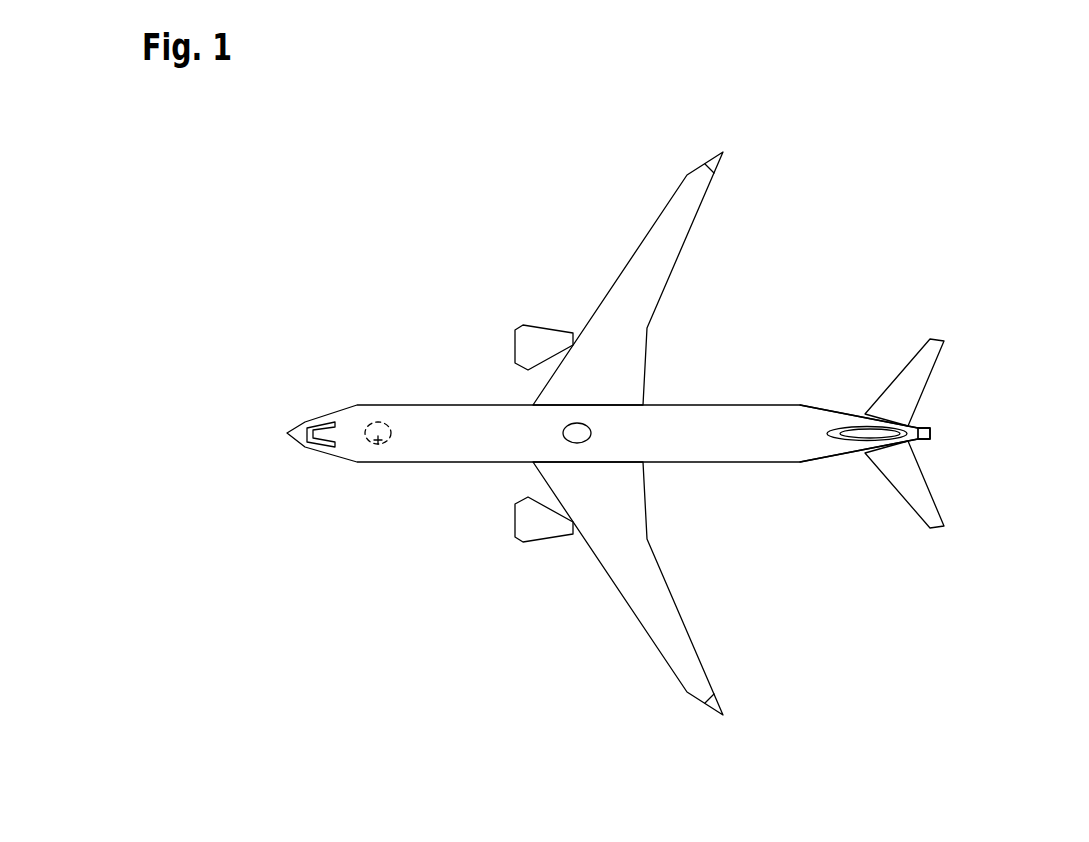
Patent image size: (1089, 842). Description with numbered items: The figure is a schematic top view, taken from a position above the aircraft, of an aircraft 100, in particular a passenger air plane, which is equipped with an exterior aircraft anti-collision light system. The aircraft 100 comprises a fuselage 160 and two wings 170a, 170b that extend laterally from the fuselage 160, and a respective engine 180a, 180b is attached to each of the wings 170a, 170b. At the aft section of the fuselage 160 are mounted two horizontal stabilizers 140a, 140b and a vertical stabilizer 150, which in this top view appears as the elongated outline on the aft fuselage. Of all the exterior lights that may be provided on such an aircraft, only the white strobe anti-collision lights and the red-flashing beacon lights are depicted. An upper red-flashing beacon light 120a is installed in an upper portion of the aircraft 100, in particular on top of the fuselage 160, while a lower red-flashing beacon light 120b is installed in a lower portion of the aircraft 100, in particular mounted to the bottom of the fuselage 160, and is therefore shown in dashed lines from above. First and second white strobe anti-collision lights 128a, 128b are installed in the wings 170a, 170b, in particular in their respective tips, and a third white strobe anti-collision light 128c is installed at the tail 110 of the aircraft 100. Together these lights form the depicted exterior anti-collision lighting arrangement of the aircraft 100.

The aircraft 100 is at (866, 219).
The tail 110 is at (946, 386).
The upper red-flashing beacon light 120a is at (572, 437).
The lower red-flashing beacon light 120b is at (377, 443).
The first white strobe anti-collision light 128a is at (711, 152).
The second white strobe anti-collision light 128b is at (713, 708).
The third white strobe anti-collision light 128c is at (931, 435).
The horizontal stabilizer 140a is at (931, 325).
The horizontal stabilizer 140b is at (930, 547).
The vertical stabilizer 150 is at (886, 421).
The fuselage 160 is at (738, 386).
The wing 170a is at (728, 194).
The wing 170b is at (728, 672).
The engine 180a is at (528, 308).
The engine 180b is at (529, 562).